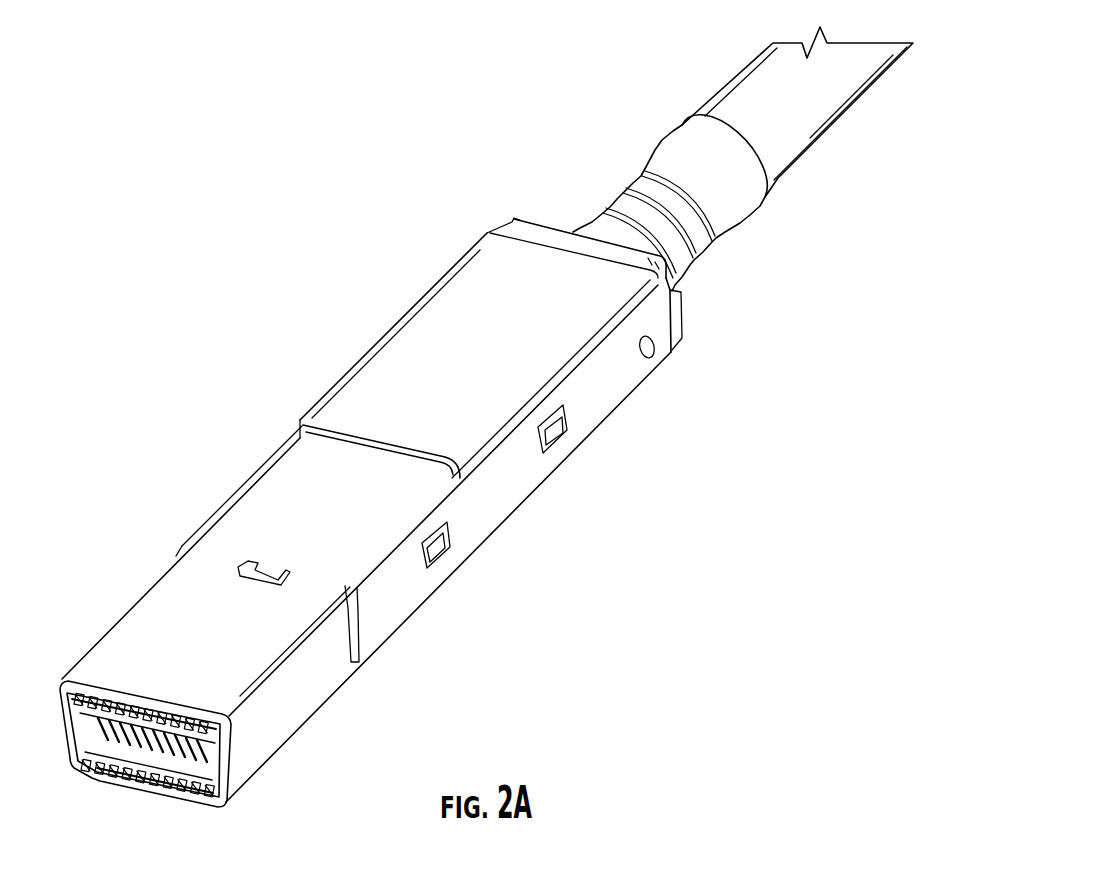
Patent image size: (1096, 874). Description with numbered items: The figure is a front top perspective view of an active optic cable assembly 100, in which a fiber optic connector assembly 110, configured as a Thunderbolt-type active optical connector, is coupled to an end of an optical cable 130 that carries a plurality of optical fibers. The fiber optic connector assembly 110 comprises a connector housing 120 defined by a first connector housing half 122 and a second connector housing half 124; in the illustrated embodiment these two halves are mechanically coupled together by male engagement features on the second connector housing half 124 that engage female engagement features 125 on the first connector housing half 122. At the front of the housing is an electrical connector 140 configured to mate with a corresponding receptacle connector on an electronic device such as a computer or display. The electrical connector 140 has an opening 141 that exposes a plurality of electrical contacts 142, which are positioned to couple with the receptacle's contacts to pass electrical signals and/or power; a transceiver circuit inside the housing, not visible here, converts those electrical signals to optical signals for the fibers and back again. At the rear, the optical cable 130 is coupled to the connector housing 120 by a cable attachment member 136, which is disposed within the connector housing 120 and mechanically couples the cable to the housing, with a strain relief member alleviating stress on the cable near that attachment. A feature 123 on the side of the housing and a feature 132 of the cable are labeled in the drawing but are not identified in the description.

The active optic cable assembly 100 is at (466, 434).
The fiber optic connector assembly 110 is at (351, 508).
The connector housing 120 is at (347, 368).
The first connector housing half 122 is at (487, 515).
The latch tab 123 is at (557, 427).
The second connector housing half 124 is at (173, 590).
The female engagement features 125 is at (556, 447).
The optical cable 130 is at (743, 152).
The cable jacket 132 is at (805, 148).
The cable attachment member 136 is at (532, 226).
The electrical connector 140 is at (105, 793).
The opening 141 is at (68, 718).
The electrical contacts 142 is at (137, 709).